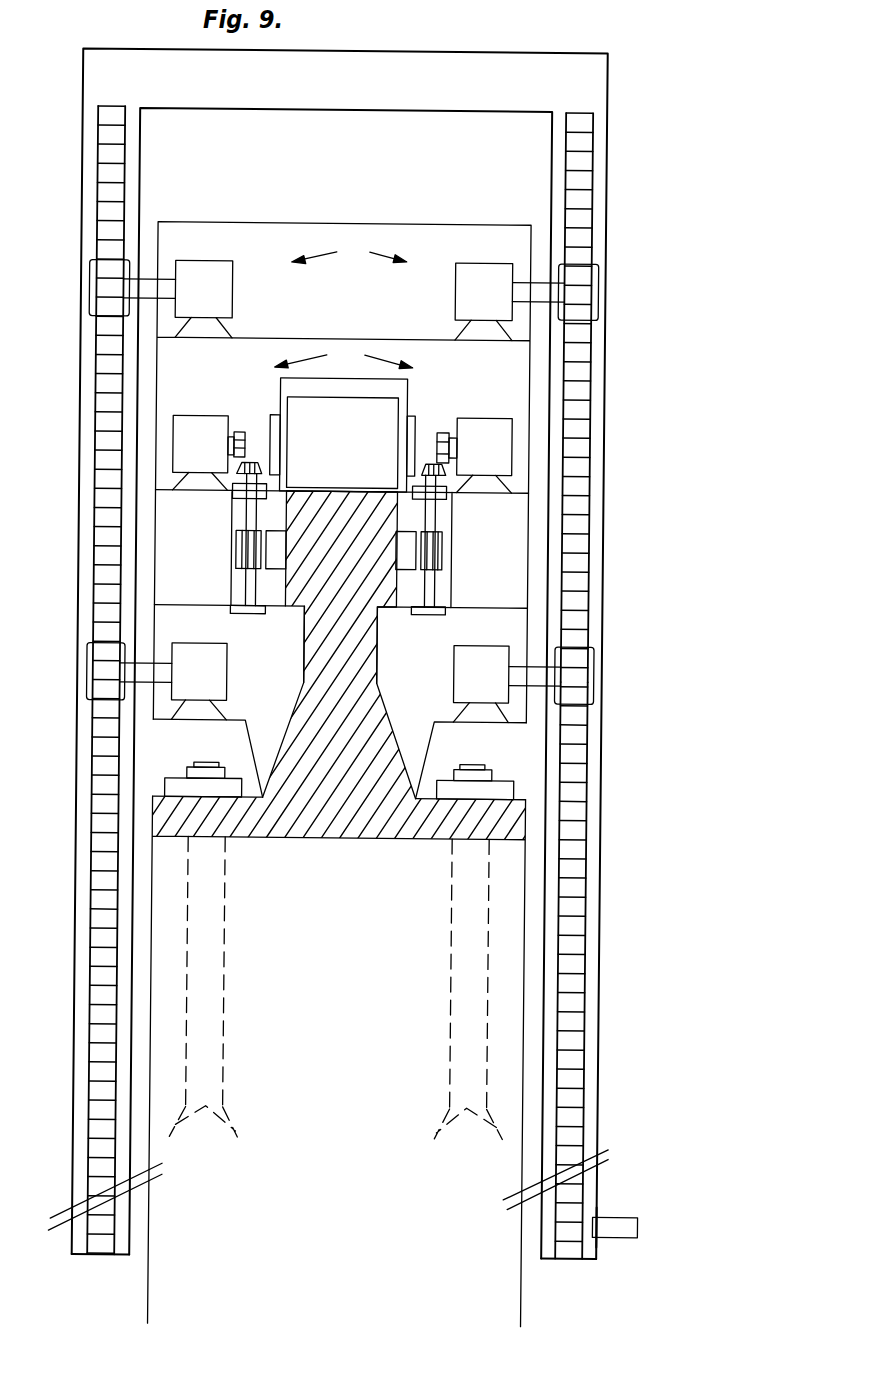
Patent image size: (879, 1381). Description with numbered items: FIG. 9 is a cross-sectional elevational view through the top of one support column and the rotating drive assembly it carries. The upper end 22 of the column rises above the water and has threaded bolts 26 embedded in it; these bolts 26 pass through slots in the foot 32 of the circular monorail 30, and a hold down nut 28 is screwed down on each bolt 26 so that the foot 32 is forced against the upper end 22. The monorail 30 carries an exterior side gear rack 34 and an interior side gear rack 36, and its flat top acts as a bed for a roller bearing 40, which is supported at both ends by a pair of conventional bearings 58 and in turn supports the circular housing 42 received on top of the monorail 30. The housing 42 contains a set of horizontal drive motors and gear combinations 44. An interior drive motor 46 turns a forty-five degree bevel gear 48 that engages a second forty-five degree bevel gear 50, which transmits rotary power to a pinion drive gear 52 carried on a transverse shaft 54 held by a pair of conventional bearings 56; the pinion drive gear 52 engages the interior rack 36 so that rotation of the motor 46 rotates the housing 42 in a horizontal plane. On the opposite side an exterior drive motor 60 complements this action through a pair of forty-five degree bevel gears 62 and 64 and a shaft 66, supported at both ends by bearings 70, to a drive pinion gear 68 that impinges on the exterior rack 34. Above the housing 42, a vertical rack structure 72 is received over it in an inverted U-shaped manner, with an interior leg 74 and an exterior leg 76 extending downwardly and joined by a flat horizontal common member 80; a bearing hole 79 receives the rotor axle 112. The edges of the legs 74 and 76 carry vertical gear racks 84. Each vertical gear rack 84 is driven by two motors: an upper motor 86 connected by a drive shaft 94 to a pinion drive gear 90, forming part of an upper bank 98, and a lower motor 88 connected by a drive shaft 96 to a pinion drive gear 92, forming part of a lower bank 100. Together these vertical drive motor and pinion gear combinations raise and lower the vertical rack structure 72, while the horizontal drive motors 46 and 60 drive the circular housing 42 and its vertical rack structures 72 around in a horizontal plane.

The upper end 22 is at (322, 898).
The bolt 26 is at (214, 763).
The hold down nut 28 is at (181, 784).
The circular monorail 30 is at (332, 560).
The foot 32 is at (512, 799).
The exterior side gear rack 34 is at (276, 543).
The interior side gear rack 36 is at (404, 539).
The roller bearing 40 is at (331, 446).
The circular housing 42 is at (343, 222).
The horizontal drive motors and gear combinations 44 is at (332, 369).
The interior drive motor 46 is at (495, 430).
The bevel gear 48 is at (445, 429).
The bevel gear 50 is at (428, 459).
The pinion drive gear 52 is at (434, 546).
The transverse shaft 54 is at (429, 586).
The bearings 56 is at (446, 496).
The bearings 58 is at (271, 414).
The exterior drive motor 60 is at (198, 430).
The bevel gear 62 is at (238, 431).
The bevel gear 64 is at (250, 458).
The shaft 66 is at (249, 583).
The drive pinion gear 68 is at (237, 541).
The bearings 70 is at (231, 494).
The vertical rack structure 72 is at (588, 174).
The interior leg 74 is at (596, 912).
The exterior leg 76 is at (81, 973).
The bearing hole 79 is at (602, 1214).
The flat horizontal common member 80 is at (474, 56).
The vertical gear rack 84 is at (109, 1247).
The motor 86 is at (215, 291).
The motor 88 is at (205, 668).
The pinion drive gear 90 is at (89, 290).
The pinion drive gear 92 is at (92, 650).
The drive shaft 94 is at (160, 289).
The drive shaft 96 is at (158, 665).
The upper bank 98 is at (339, 264).
The lower bank 100 is at (249, 680).
The rotor axle 112 is at (628, 1215).